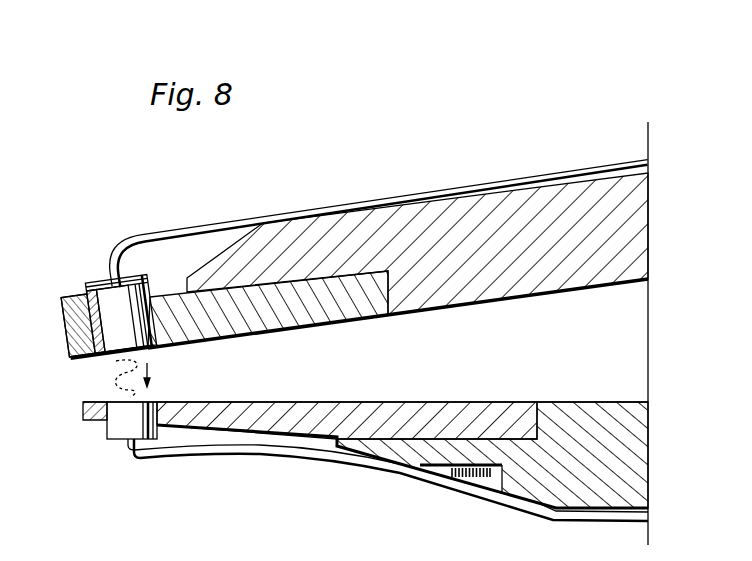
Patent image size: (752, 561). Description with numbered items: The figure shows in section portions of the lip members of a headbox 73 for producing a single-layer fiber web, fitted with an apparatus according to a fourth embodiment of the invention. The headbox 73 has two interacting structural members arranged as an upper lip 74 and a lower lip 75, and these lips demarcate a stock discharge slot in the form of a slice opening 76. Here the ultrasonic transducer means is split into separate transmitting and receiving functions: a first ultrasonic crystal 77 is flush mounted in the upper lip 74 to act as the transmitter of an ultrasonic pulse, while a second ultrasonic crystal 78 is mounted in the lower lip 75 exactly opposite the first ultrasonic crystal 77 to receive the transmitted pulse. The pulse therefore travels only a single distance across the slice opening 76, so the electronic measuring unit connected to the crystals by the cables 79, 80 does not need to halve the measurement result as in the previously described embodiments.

The headbox 73 is at (457, 205).
The upper lip 74 is at (75, 357).
The lower lip 75 is at (83, 406).
The slice opening 76 is at (93, 382).
The first ultrasonic crystal 77 is at (100, 287).
The second ultrasonic crystal 78 is at (118, 442).
The cable 79 is at (165, 233).
The cable 80 is at (191, 456).